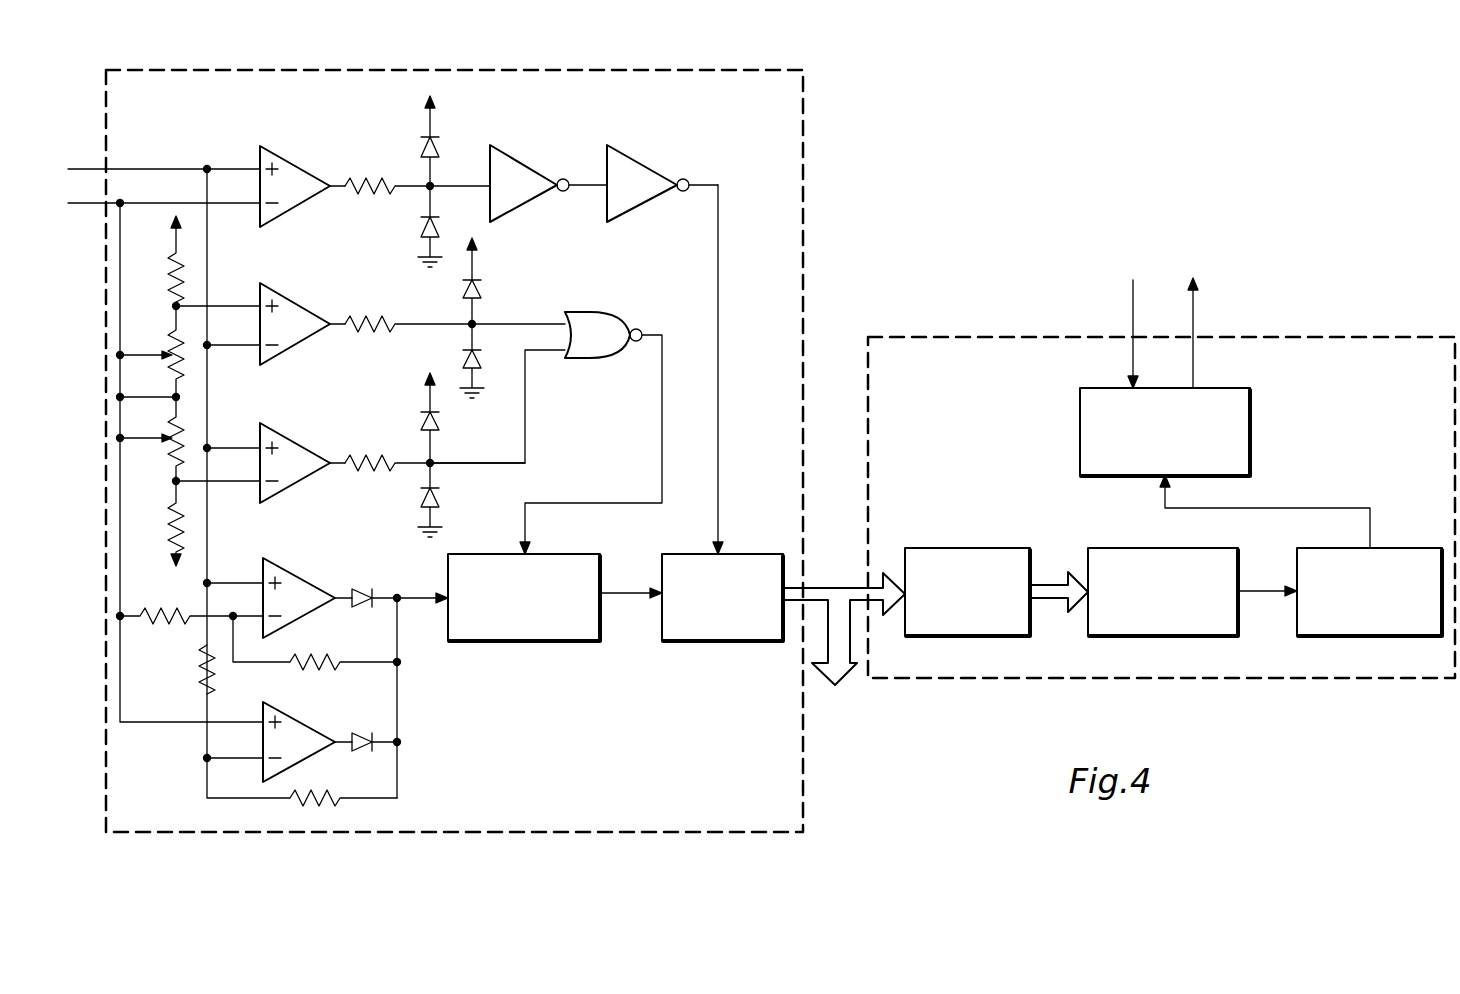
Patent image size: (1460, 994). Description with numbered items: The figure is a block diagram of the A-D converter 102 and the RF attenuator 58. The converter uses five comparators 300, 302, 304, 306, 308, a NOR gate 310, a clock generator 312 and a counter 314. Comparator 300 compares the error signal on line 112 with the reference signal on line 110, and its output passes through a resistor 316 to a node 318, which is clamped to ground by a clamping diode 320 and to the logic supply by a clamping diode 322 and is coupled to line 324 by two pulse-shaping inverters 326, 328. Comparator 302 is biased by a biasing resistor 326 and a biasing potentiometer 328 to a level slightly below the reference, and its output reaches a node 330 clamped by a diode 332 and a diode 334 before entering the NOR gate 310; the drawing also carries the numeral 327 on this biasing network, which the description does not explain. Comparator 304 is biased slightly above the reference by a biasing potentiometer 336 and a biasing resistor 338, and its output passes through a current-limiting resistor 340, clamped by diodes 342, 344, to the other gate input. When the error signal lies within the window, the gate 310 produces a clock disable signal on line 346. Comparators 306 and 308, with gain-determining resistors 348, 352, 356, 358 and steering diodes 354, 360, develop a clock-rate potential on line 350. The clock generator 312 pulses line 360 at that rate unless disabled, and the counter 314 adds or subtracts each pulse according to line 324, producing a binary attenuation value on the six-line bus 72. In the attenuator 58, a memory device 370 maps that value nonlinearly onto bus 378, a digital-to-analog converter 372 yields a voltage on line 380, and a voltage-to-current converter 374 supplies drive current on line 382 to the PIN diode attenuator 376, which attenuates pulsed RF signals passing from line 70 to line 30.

The A-D converter 102 is at (803, 178).
The line 112 is at (118, 169).
The line 110 is at (112, 203).
The comparator 300 is at (303, 159).
The comparator 302 is at (303, 296).
The comparator 304 is at (308, 436).
The comparator 306 is at (308, 572).
The comparator 308 is at (308, 716).
The NOR gate 310 is at (588, 312).
The clock generator 312 is at (543, 554).
The counter 314 is at (738, 554).
The resistor 316 is at (372, 176).
The node 318 is at (434, 182).
The clamping diode 320 is at (422, 230).
The clamping diode 322 is at (437, 143).
The line 324 is at (718, 245).
The pulse-shaping inverter 326 is at (526, 160).
The potentiometer 327 is at (165, 445).
The pulse-shaping inverter 328 is at (646, 160).
The node 330 is at (476, 320).
The clamping diode 332 is at (482, 356).
The clamping diode 334 is at (480, 288).
The biasing potentiometer 336 is at (372, 314).
The biasing resistor 338 is at (160, 525).
The current-limiting resistor 340 is at (372, 453).
The diode 342 is at (440, 494).
The diode 344 is at (436, 426).
The line 346 is at (662, 395).
The gain determining resistor 348 is at (158, 626).
The line 350 is at (397, 700).
The gain determining resistor 352 is at (312, 655).
The signal steering diode 354 is at (365, 585).
The gain-determining resistor 356 is at (200, 672).
The gain-determining resistor 358 is at (318, 790).
The line 360 is at (362, 730).
The bus 72 is at (825, 588).
The RF attenuator 58 is at (1358, 337).
The memory device 370 is at (958, 548).
The digital-to-analog converter 372 is at (1168, 548).
The voltage-to-current converter 374 is at (1385, 548).
The PIN diode attenuator 376 is at (1212, 388).
The output bus 378 is at (1050, 585).
The line 380 is at (1265, 591).
The line 382 is at (1290, 508).
The line 70 is at (1133, 296).
The line 30 is at (1193, 315).